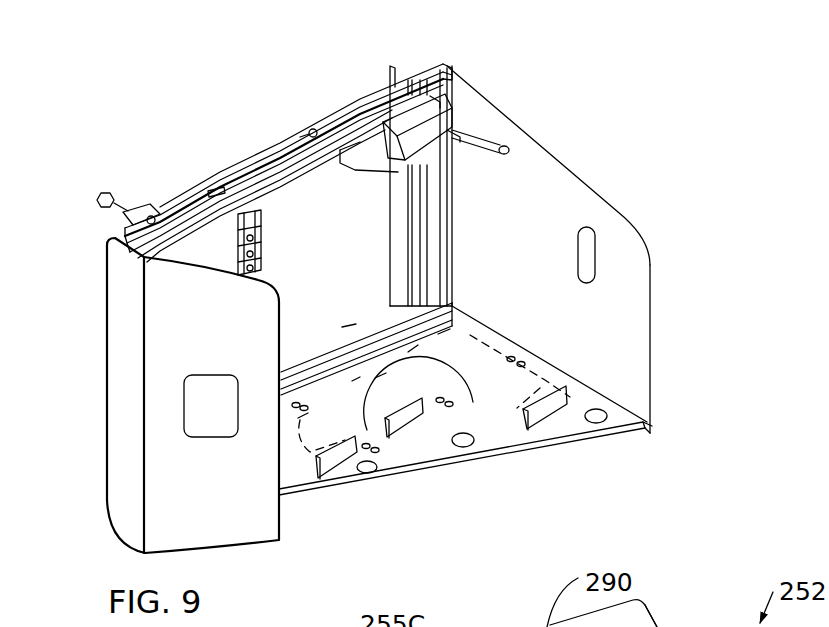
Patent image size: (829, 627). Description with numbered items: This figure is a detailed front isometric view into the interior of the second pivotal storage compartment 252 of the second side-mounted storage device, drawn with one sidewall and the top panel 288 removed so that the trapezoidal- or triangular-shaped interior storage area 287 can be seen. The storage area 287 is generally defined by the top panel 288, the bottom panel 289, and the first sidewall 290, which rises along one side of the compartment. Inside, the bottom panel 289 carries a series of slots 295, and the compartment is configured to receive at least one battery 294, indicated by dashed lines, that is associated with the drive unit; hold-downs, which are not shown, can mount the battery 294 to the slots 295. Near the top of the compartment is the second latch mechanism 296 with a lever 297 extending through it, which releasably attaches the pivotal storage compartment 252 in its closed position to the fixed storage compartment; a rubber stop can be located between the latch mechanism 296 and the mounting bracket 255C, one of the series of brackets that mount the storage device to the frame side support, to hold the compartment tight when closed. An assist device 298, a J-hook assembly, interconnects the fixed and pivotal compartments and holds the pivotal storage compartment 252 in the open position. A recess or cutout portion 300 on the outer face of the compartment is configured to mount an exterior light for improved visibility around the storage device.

The second pivotal storage compartment 252 is at (660, 174).
The mounting bracket 255C is at (402, 236).
The storage area 287 is at (512, 243).
The top panel 288 is at (660, 626).
The bottom panel 289 is at (553, 431).
The first sidewall 290 is at (650, 272).
The battery 294 is at (322, 404).
The slots 295 is at (524, 340).
The second latch mechanism 296 is at (463, 100).
The lever 297 is at (410, 193).
The assist device 298 is at (234, 210).
The cutout portion 300 is at (208, 408).